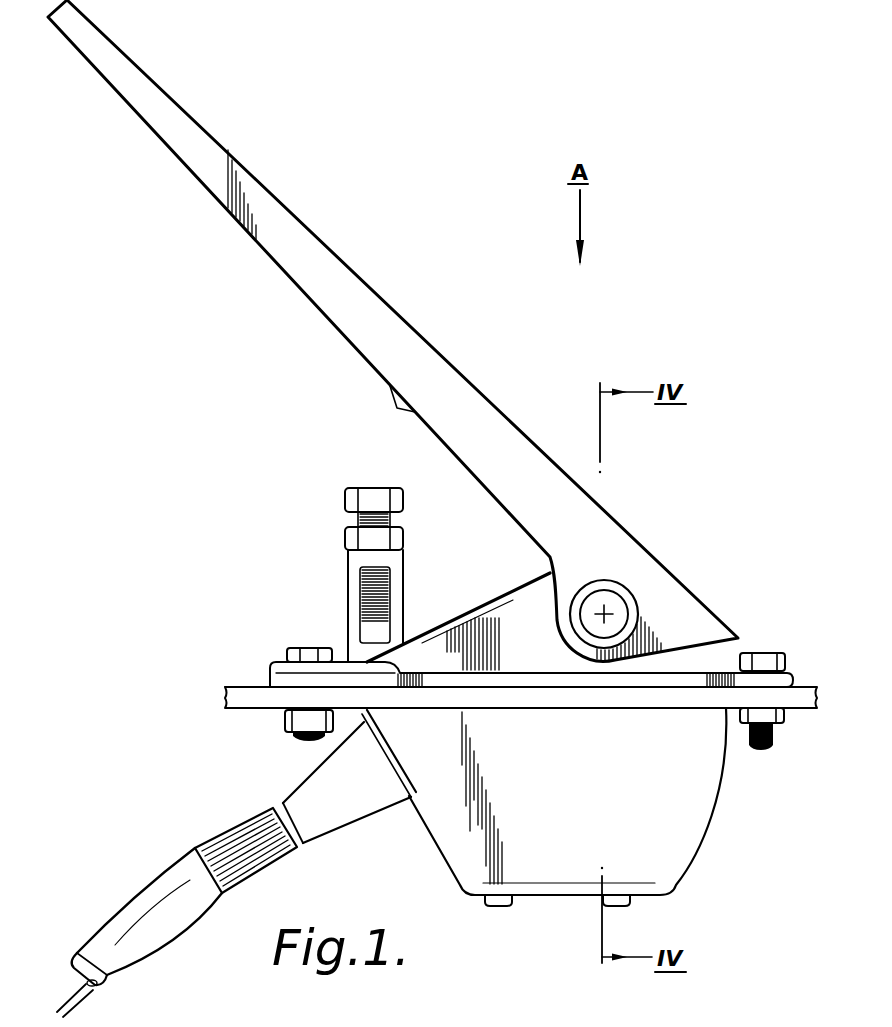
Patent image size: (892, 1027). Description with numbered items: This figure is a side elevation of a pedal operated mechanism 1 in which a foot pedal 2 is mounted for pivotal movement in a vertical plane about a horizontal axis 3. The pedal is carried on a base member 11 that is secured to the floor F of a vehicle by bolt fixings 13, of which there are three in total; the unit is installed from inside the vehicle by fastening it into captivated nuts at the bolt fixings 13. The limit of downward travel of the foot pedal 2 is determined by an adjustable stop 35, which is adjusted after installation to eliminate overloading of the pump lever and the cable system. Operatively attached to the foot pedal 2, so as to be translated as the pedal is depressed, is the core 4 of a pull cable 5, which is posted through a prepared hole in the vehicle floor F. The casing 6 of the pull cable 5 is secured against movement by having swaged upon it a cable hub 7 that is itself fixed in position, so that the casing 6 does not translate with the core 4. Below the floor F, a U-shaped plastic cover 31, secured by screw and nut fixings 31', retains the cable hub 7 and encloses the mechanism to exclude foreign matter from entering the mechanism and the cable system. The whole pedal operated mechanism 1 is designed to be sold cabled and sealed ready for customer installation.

The pedal operated mechanism 1 is at (665, 487).
The foot pedal 2 is at (362, 297).
The horizontal axis 3 is at (612, 606).
The core 4 is at (80, 994).
The pull cable 5 is at (130, 898).
The casing 6 is at (185, 877).
The cable hub 7 is at (305, 797).
The base member 11 is at (480, 627).
The bolt fixings 13 is at (304, 648).
The U-shaped plastic cover 31 is at (584, 801).
The screw and nut fixings 31' is at (523, 912).
The adjustable stop 35 is at (346, 503).
The floor F is at (797, 694).